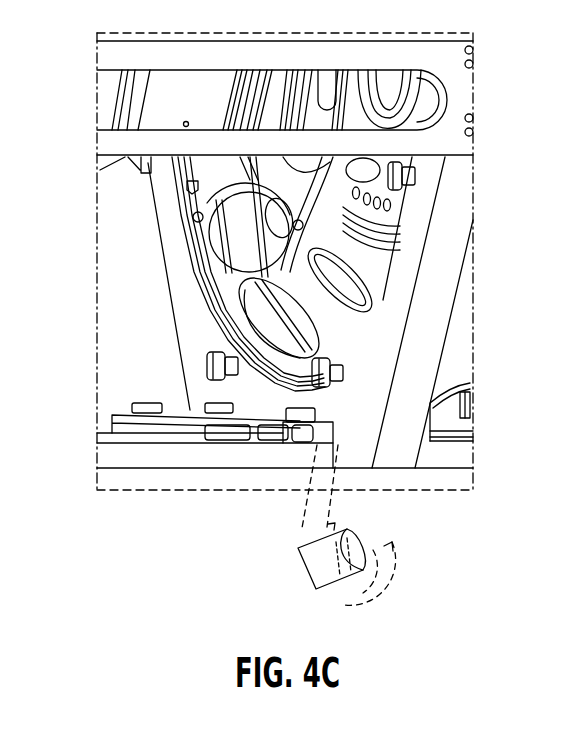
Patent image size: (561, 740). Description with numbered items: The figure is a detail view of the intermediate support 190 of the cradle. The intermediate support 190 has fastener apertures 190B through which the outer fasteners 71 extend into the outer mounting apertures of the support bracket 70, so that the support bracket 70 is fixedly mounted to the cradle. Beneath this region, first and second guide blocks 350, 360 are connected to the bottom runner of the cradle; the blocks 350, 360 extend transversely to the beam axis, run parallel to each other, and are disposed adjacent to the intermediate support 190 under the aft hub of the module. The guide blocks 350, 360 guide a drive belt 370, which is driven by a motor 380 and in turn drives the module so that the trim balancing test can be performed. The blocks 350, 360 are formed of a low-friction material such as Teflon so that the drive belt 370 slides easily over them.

The intermediate support 190 is at (155, 226).
The fastener apertures 190B is at (345, 372).
The support bracket 70 is at (223, 293).
The outer fasteners 71 is at (207, 368).
The second guide block 360 is at (165, 428).
The first guide block 350 is at (333, 427).
The drive belt 370 is at (299, 530).
The motor 380 is at (300, 570).